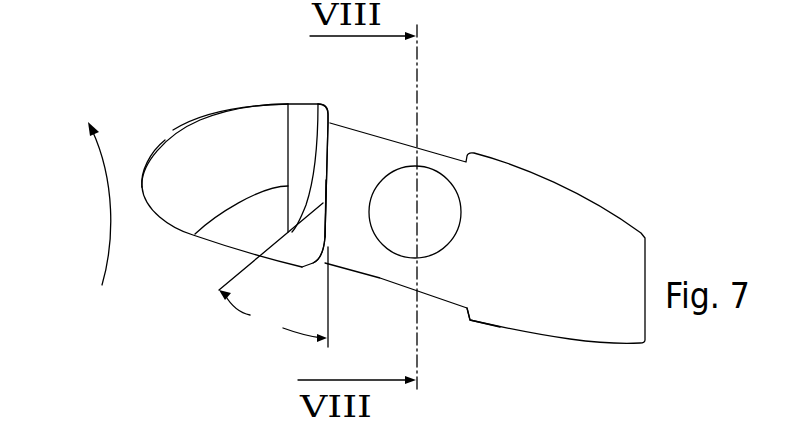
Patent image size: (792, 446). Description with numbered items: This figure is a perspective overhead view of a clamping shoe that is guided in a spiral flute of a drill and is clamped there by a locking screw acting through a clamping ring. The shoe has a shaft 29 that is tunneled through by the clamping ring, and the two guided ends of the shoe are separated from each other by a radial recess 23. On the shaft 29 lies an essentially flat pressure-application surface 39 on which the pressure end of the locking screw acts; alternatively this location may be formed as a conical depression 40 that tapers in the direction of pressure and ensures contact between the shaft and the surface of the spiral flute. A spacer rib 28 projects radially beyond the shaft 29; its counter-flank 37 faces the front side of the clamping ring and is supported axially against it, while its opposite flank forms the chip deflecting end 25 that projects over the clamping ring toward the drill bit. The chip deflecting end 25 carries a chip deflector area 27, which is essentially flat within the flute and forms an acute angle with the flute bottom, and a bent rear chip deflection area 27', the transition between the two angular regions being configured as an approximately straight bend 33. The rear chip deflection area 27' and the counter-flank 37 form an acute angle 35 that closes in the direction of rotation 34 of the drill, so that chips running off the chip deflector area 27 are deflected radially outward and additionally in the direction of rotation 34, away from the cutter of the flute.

The radial recess 23 is at (434, 138).
The chip deflecting end 25 is at (142, 180).
The chip deflector area 27 is at (225, 109).
The rear chip deflection area 27' is at (276, 144).
The spacer rib 28 is at (327, 145).
The shaft 29 is at (472, 233).
The bend 33 is at (195, 234).
The direction of rotation 34 is at (113, 219).
The acute angle 35 is at (273, 275).
The counter-flank 37 is at (333, 180).
The pressure-application surface 39 is at (415, 212).
The conical depression 40 is at (445, 225).